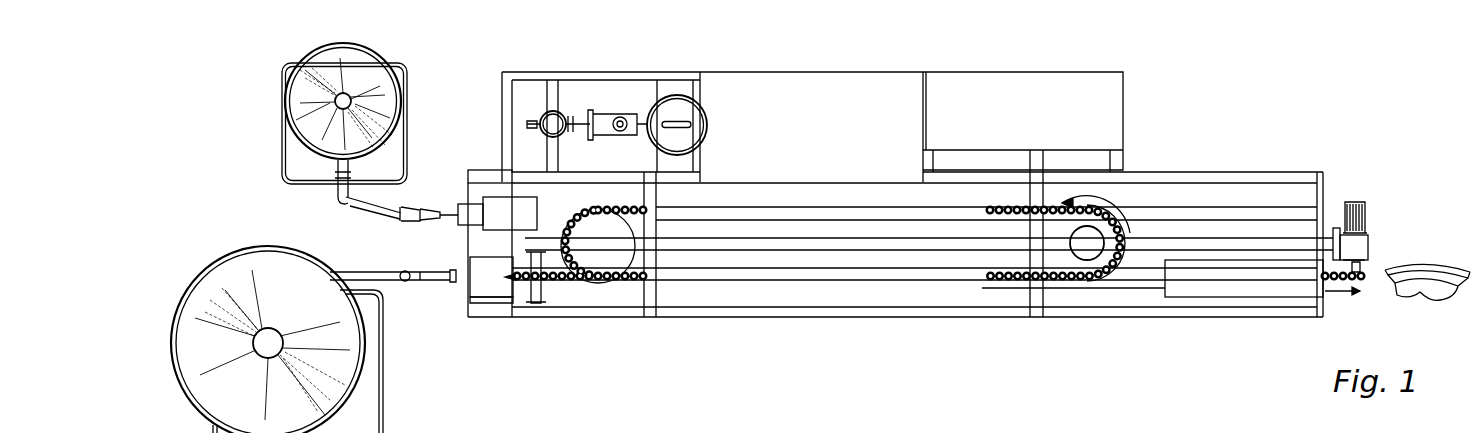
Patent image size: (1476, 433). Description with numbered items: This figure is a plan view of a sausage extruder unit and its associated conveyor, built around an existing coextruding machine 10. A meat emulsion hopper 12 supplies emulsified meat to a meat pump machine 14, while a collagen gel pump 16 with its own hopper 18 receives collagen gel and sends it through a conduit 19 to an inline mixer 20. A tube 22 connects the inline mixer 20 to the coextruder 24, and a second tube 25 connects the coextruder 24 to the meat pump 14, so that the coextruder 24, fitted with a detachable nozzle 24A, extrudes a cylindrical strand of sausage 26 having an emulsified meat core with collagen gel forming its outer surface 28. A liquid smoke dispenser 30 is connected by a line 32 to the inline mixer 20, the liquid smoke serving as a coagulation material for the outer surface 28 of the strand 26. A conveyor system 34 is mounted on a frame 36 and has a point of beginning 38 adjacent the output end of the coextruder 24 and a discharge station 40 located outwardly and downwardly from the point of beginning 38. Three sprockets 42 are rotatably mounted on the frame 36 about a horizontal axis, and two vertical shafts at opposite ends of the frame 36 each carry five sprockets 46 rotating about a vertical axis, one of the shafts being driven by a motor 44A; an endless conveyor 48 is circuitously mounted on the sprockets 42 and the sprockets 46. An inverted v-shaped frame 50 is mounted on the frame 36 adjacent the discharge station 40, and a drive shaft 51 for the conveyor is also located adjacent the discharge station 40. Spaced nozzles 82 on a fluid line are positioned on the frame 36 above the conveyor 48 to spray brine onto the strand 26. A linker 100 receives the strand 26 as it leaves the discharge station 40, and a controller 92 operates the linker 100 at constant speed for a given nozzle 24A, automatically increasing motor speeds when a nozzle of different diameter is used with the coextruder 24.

The coextruding machine 10 is at (1165, 130).
The meat emulsion hopper 12 is at (253, 262).
The meat pump machine 14 is at (385, 333).
The collagen gel pump 16 is at (290, 178).
The hopper 18 is at (308, 135).
The conduit 19 is at (365, 205).
The inline mixer 20 is at (470, 210).
The tube 22 is at (465, 240).
The coextruder 24 is at (495, 300).
The detachable nozzle 24A is at (510, 432).
The tube 25 is at (413, 282).
The coextruded strand of sausage 26 is at (1452, 270).
The outer surface 28 is at (812, 127).
The liquid smoke dispenser 30 is at (553, 118).
The line 32 is at (475, 170).
The conveyor system 34 is at (828, 320).
The frame 36 is at (903, 320).
The point of beginning 38 is at (607, 262).
The discharge station 40 is at (1380, 265).
The sprockets 42 is at (535, 432).
The motor 44A is at (1108, 226).
The sprockets 46 is at (1180, 285).
The endless conveyor 48 is at (830, 210).
The inverted v-shaped frame 50 is at (1087, 262).
The drive shaft 51 is at (1352, 202).
The nozzles 82 is at (978, 424).
The controller 92 is at (706, 424).
The linker 100 is at (1435, 292).